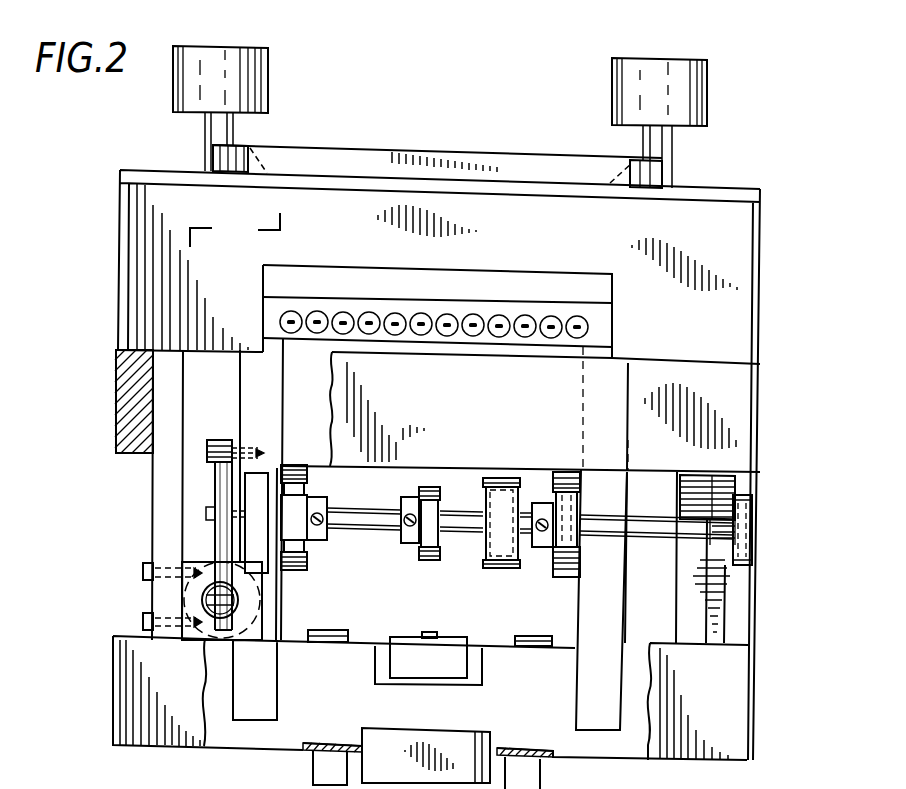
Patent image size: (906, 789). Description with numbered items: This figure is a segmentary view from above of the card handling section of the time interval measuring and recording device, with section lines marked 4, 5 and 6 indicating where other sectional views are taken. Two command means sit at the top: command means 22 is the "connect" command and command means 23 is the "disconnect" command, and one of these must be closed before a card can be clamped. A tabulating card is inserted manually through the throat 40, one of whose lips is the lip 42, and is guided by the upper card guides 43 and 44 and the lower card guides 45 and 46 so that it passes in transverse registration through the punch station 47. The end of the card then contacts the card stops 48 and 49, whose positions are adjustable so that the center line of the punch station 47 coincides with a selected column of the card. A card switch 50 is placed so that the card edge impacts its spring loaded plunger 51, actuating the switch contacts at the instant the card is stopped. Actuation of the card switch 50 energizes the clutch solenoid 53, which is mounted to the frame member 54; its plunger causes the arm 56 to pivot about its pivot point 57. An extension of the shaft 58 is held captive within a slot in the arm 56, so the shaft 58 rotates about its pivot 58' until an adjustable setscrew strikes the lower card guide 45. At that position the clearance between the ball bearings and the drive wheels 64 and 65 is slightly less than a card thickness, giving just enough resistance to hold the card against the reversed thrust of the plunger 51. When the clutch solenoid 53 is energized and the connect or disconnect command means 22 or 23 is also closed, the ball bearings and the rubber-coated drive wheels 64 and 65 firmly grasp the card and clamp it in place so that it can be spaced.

The section line 4- 4 is at (283, 43).
The section line 5- 5 is at (478, 472).
The section line 6- 6 is at (106, 497).
The command means 22 is at (173, 95).
The command means 23 is at (707, 86).
The throat 40 is at (395, 150).
The lip 42 is at (308, 543).
The upper card guide 43 is at (220, 161).
The upper card guide 44 is at (632, 165).
The lower card guide 45 is at (280, 595).
The lower card guide 46 is at (580, 600).
The punch station 47 is at (436, 300).
The card stop 48 is at (333, 630).
The card stop 49 is at (522, 637).
The card switch 50 is at (448, 637).
The plunger 51 is at (428, 631).
The clutch solenoid 53 is at (232, 602).
The frame member 54 is at (155, 540).
The arm 56 is at (226, 496).
The pivot point 57 is at (208, 452).
The shaft 58 is at (436, 516).
The pivot 58' is at (772, 534).
The drive wheel 64 is at (289, 470).
The drive wheel 65 is at (580, 486).